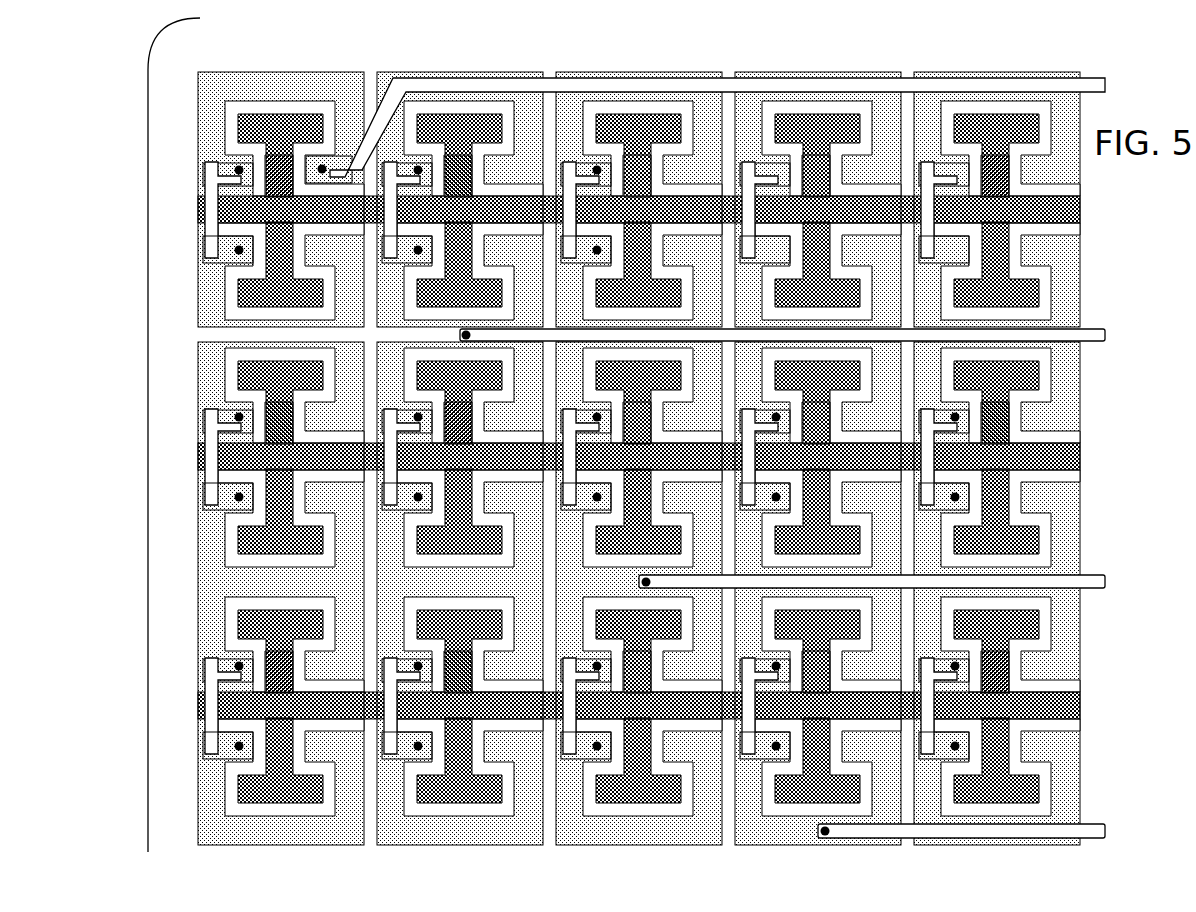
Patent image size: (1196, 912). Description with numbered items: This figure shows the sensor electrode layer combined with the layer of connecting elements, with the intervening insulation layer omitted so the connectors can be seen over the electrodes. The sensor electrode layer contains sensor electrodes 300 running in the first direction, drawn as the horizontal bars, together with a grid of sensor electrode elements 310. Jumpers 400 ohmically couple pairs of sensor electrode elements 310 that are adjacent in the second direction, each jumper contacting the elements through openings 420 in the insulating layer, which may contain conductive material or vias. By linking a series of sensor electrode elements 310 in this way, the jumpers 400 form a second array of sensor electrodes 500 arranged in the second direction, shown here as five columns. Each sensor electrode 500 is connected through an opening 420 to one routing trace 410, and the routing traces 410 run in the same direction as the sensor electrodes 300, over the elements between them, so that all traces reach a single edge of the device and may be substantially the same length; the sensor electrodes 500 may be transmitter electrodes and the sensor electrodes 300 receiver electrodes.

The sensor electrode 300 is at (197, 458).
The sensor electrode element 310 is at (197, 106).
The jumper 400 is at (204, 196).
The routing trace 410 is at (1105, 582).
The opening 420 is at (233, 665).
The sensor electrode 500 is at (280, 70).